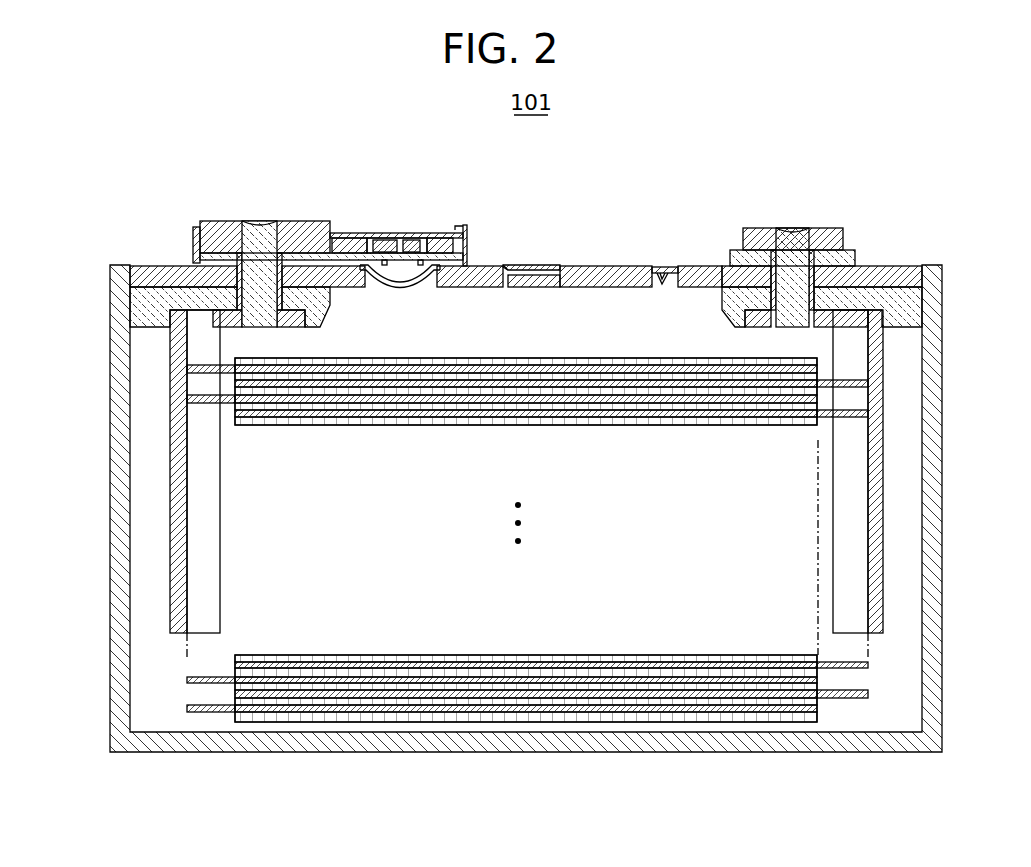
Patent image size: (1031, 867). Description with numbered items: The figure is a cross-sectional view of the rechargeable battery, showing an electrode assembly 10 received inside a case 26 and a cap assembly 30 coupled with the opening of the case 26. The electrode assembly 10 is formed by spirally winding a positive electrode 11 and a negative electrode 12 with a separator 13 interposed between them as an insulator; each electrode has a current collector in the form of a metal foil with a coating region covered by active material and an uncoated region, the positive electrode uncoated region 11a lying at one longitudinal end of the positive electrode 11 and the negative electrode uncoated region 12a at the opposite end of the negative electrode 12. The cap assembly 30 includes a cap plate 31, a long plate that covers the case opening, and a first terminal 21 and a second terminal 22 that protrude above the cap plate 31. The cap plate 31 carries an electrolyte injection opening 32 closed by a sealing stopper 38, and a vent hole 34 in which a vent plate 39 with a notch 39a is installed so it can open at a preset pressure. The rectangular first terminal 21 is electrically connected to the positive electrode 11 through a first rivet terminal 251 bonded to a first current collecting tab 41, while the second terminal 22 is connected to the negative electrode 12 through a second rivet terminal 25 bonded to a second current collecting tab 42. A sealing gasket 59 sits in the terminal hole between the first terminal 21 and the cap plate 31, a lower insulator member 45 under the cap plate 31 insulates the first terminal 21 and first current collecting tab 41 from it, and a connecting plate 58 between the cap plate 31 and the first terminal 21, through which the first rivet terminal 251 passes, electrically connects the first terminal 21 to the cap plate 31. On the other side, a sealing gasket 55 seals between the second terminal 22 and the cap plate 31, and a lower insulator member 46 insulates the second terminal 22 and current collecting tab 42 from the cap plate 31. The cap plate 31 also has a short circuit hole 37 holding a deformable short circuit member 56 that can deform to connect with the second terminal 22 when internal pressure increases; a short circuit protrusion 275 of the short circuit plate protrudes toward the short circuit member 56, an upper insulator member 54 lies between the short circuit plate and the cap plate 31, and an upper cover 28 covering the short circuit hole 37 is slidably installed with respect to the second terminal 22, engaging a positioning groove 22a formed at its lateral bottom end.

The electrode assembly 10 is at (622, 734).
The positive electrode 11 is at (718, 700).
The positive electrode uncoated region 11a is at (845, 700).
The negative electrode 12 is at (322, 722).
The negative electrode uncoated region 12a is at (200, 713).
The separator 13 is at (522, 693).
The first terminal 21 is at (828, 240).
The second terminal 22 is at (234, 228).
The positioning groove 22a is at (334, 250).
The second rivet terminal 25 is at (270, 221).
The first rivet terminal 251 is at (792, 232).
The case 26 is at (940, 538).
The upper cover 28 is at (345, 238).
The short circuit protrusion 275 is at (415, 265).
The cap assembly 30 is at (493, 263).
The cap plate 31 is at (905, 272).
The electrolyte injection opening 32 is at (665, 288).
The vent hole 34 is at (538, 288).
The short circuit hole 37 is at (378, 262).
The sealing stopper 38 is at (665, 267).
The vent plate 39 is at (558, 266).
The notch 39a is at (530, 265).
The first current collecting tab 41 is at (880, 366).
The second current collecting tab 42 is at (178, 378).
The lower insulator member 45 is at (912, 300).
The lower insulator member 46 is at (150, 297).
The upper insulator member 54 is at (466, 226).
The sealing gasket 55 is at (237, 280).
The short circuit member 56 is at (300, 250).
The connecting plate 58 is at (860, 258).
The sealing gasket 59 is at (745, 280).